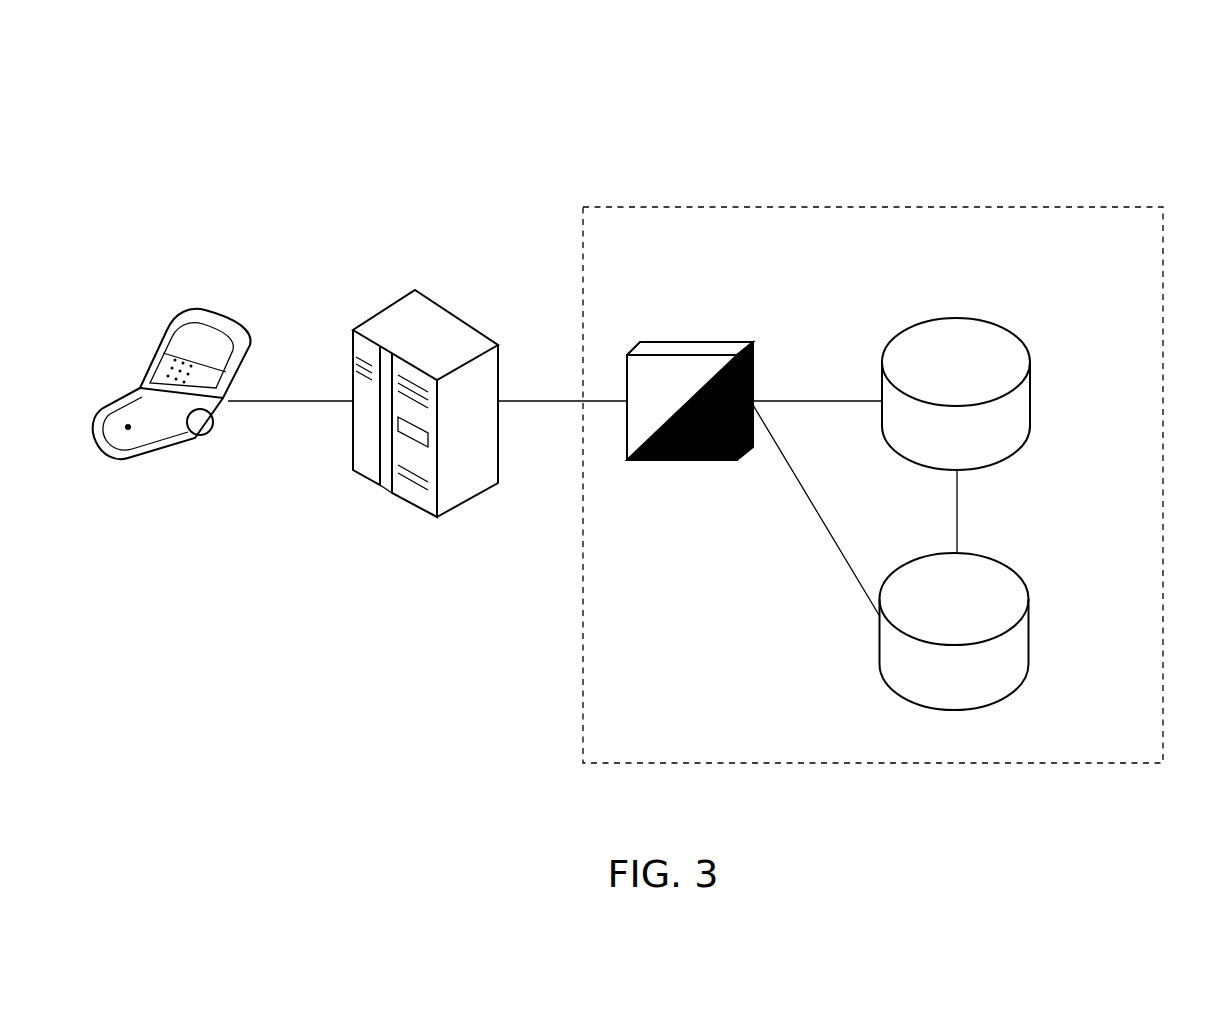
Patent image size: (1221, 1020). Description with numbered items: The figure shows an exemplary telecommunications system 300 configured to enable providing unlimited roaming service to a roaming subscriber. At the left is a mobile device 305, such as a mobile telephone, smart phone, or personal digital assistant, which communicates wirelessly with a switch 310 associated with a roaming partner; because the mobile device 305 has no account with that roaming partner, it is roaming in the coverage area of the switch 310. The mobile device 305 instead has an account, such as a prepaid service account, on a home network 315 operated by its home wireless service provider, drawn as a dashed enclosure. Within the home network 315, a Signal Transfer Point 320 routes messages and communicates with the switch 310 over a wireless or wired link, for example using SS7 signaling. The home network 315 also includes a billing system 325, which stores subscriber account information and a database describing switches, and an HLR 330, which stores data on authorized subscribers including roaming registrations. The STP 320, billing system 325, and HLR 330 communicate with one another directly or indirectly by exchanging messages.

The telecommunications system 300 is at (431, 131).
The mobile device 305 is at (223, 311).
The switch 310 is at (422, 292).
The home network 315 is at (962, 207).
The Signal Transfer Point 320 is at (673, 337).
The billing system 325 is at (953, 312).
The HLR 330 is at (1020, 578).